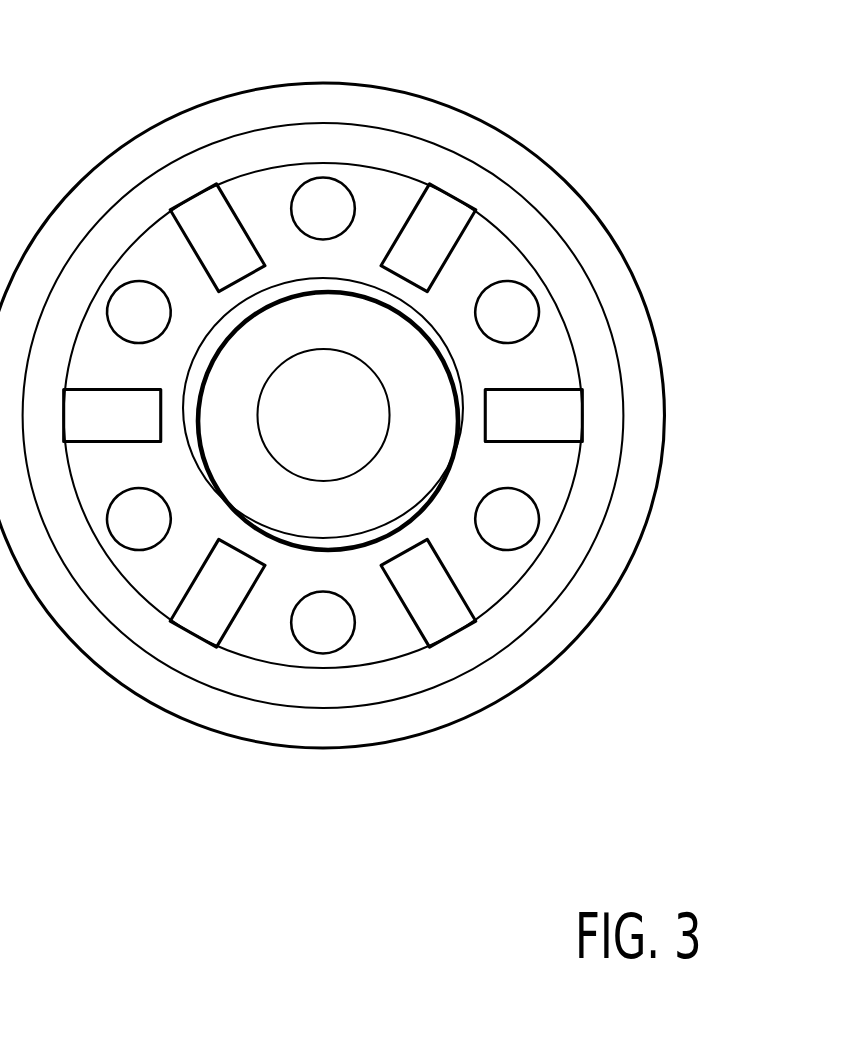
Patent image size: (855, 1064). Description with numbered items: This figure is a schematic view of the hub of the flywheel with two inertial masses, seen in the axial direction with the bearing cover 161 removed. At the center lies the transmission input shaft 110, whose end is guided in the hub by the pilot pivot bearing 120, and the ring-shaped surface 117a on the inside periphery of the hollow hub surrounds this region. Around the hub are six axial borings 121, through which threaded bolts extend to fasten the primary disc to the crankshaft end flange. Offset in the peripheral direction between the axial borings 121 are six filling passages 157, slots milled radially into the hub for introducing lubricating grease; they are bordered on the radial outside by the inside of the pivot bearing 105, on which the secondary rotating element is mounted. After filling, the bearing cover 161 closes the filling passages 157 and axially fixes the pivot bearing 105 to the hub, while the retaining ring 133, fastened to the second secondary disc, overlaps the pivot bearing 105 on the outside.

The retaining ring 133 is at (638, 348).
The pivot bearing 105 is at (592, 410).
The bearing cover 161 is at (560, 472).
The filling passages 157 is at (203, 218).
The axial borings 121 is at (330, 200).
The ring-shaped surface 117a is at (418, 461).
The pilot pivot bearing 120 is at (383, 487).
The input shaft 110 is at (335, 450).